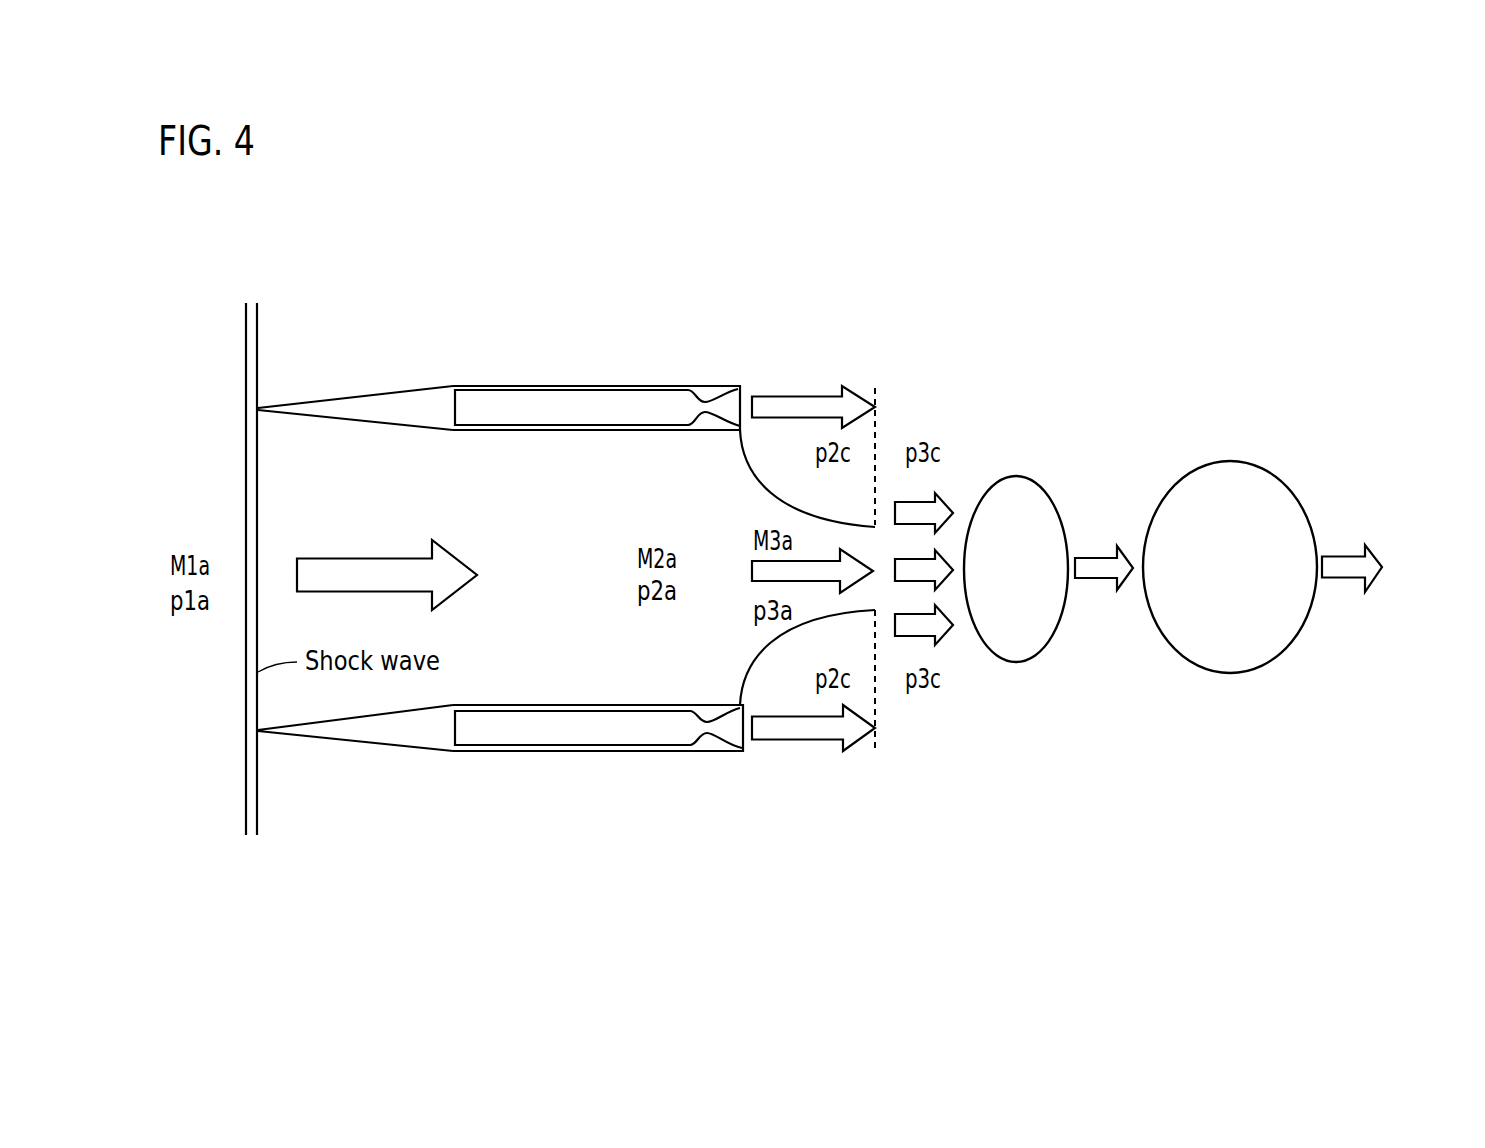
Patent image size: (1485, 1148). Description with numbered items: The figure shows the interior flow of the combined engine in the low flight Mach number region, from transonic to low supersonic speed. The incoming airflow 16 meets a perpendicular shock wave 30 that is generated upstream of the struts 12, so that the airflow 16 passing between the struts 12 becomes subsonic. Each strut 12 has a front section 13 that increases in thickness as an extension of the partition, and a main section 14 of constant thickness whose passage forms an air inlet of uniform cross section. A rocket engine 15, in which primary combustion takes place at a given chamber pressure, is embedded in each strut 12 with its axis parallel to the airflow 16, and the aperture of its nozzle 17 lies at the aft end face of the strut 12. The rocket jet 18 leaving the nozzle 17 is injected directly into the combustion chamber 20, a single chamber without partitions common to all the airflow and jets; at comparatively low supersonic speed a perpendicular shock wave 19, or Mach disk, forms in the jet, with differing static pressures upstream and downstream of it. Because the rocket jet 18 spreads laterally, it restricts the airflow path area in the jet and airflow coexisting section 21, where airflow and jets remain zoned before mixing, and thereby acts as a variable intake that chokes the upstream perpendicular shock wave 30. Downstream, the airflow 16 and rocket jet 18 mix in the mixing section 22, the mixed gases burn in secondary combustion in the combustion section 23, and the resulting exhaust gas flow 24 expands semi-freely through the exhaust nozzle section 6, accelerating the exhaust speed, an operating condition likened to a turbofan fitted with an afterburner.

The exhaust nozzle section 6 is at (1441, 529).
The strut 12 is at (515, 383).
The front section 13 is at (395, 398).
The main section 14 is at (583, 385).
The rocket engine 15 is at (648, 383).
The airflow 16 is at (452, 548).
The nozzle 17 is at (725, 400).
The rocket jet 18 is at (812, 400).
The perpendicular shock wave 19 is at (875, 390).
The combustion chamber 20 is at (1162, 344).
The jet and airflow coexisting section 21 is at (828, 522).
The mixing section 22 is at (1018, 476).
The combustion section 23 is at (1240, 462).
The exhaust gas flow 24 is at (1350, 565).
The perpendicular shock wave 30 is at (246, 483).